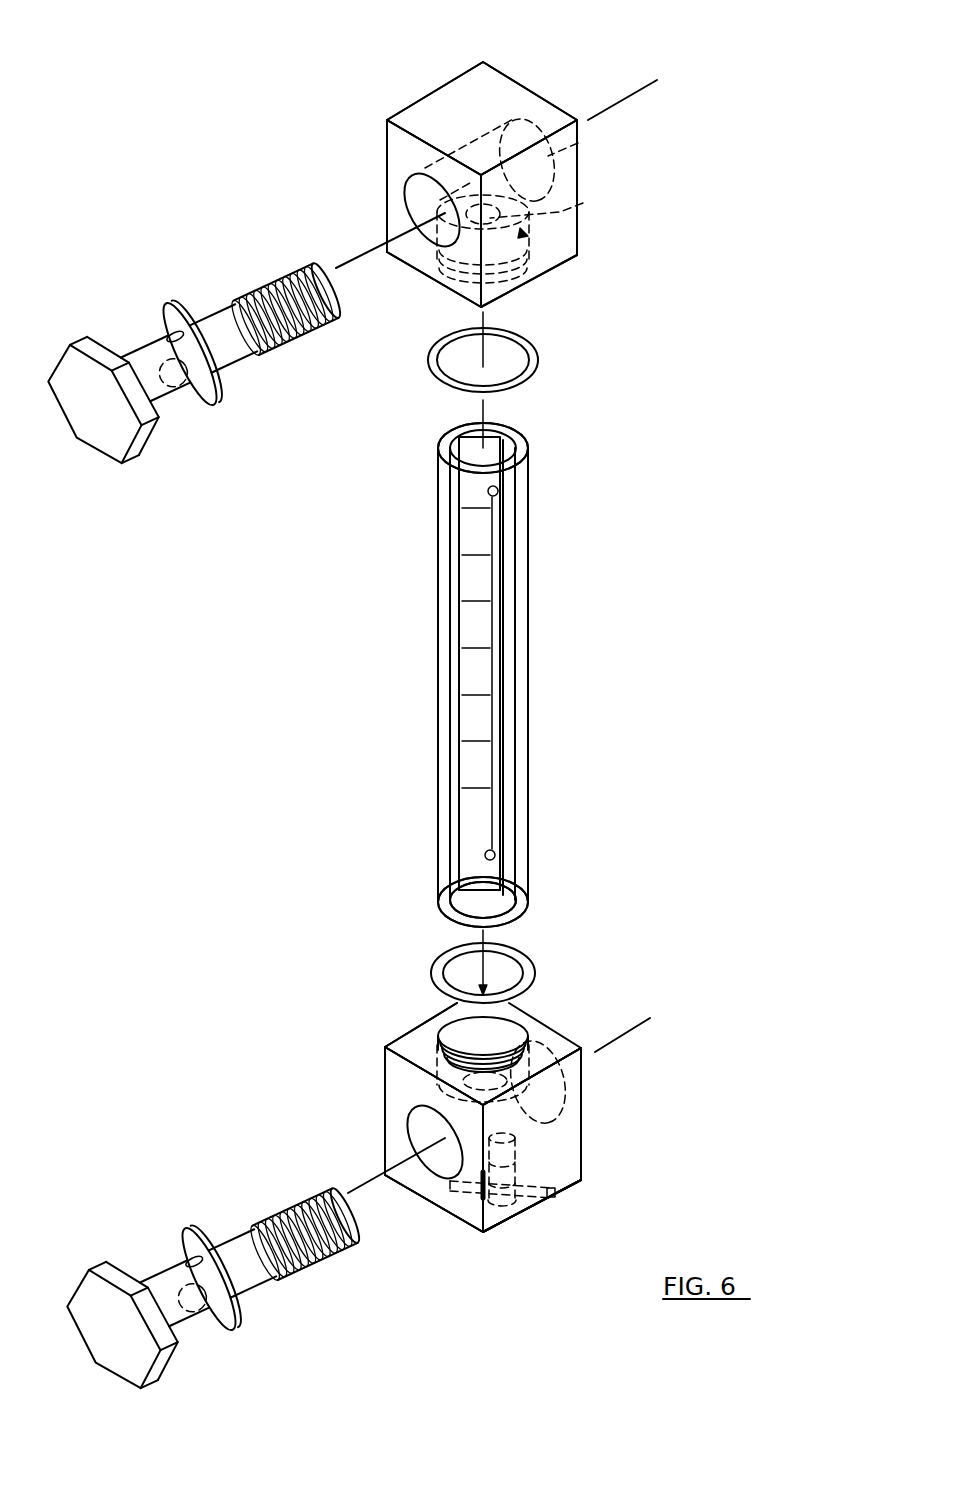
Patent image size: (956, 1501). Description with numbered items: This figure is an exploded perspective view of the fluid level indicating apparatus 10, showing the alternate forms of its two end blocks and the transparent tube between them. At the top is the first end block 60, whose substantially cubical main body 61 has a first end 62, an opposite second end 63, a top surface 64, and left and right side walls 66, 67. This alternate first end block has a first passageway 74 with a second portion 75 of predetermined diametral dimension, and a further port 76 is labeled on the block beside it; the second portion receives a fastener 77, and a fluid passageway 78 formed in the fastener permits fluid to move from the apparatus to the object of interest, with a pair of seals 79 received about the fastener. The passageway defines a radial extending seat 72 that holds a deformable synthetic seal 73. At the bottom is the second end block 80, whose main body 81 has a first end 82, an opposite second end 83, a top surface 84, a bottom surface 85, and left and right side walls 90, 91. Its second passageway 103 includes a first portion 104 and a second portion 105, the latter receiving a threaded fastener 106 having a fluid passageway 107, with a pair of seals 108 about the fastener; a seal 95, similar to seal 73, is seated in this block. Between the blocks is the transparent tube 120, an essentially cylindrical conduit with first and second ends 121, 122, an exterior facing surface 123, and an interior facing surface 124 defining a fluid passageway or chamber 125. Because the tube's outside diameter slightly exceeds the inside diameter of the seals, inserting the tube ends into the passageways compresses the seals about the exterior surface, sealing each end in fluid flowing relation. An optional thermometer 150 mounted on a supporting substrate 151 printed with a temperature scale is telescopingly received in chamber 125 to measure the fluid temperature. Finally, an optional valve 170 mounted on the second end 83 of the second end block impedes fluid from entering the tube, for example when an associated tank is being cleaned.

The apparatus 10 is at (298, 647).
The first end block 60 is at (443, 68).
The main body 61 is at (565, 225).
The first end 62 is at (510, 82).
The second end 63 is at (570, 260).
The top surface 64 is at (403, 160).
The left side wall 66 is at (385, 138).
The right side wall 67 is at (542, 243).
The radial extending seat 72 is at (502, 275).
The seal 73 is at (433, 372).
The first passageway 74 is at (537, 110).
The second portion 75 is at (583, 203).
The side port of upper block 76 is at (578, 143).
The fastener 77 is at (195, 310).
The fluid passageway 78 is at (193, 398).
The seals 79 is at (167, 312).
The second end block 80 is at (573, 1190).
The main body 81 is at (570, 1120).
The first end 82 is at (547, 1040).
The second end 83 is at (525, 1212).
The top surface 84 is at (412, 1063).
The bottom surface 85 is at (583, 1142).
The left side wall 90 is at (432, 1013).
The right side wall 91 is at (558, 1163).
The seal 95 is at (527, 957).
The second passageway 103 is at (420, 1074).
The first portion 104 is at (510, 1030).
The second portion 105 is at (565, 1088).
The fastener 106 is at (210, 1328).
The fluid passageway 107 is at (280, 1283).
The seals 108 is at (192, 1232).
The transparent tube 120 is at (532, 737).
The first end 121 is at (522, 482).
The second end 122 is at (523, 888).
The exterior facing surface 123 is at (527, 790).
The interior facing surface 124 is at (450, 805).
The fluid passageway 125 is at (480, 893).
The thermometer 150 is at (497, 660).
The supporting substrate 151 is at (475, 612).
The valve 170 is at (513, 1205).